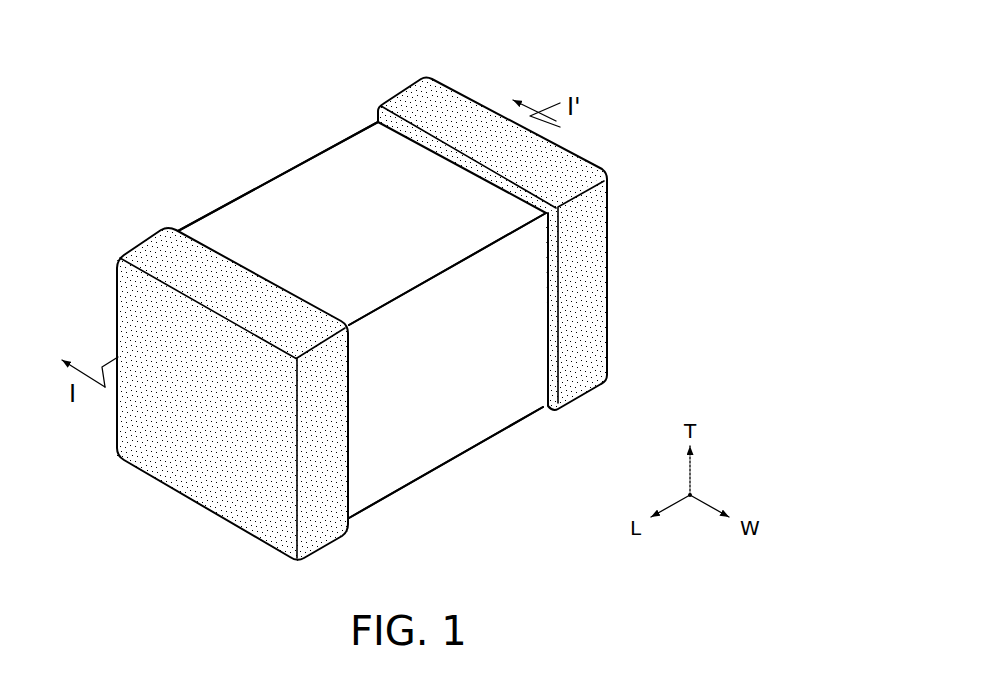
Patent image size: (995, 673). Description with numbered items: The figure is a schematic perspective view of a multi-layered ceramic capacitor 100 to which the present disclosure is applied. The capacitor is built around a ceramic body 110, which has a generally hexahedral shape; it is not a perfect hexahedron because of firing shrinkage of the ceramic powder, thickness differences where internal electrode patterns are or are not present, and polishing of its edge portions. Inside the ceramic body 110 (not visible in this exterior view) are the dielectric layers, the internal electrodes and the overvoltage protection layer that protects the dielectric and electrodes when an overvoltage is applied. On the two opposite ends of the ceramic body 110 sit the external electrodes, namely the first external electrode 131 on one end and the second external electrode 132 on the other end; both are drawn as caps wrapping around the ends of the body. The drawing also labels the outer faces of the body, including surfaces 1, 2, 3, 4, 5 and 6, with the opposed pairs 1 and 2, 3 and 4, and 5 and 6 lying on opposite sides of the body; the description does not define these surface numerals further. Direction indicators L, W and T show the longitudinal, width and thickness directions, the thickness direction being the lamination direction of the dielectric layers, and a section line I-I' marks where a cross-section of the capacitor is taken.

The multi-layered ceramic capacitor 100 is at (188, 28).
The ceramic body 110 is at (303, 192).
The first external electrode 131 is at (150, 248).
The second external electrode 132 is at (412, 92).
The first surface 1 is at (353, 181).
The second surface 2 is at (452, 458).
The third surface 3 is at (488, 396).
The fourth surface 4 is at (249, 236).
The fifth surface 5 is at (198, 464).
The sixth surface 6 is at (578, 240).